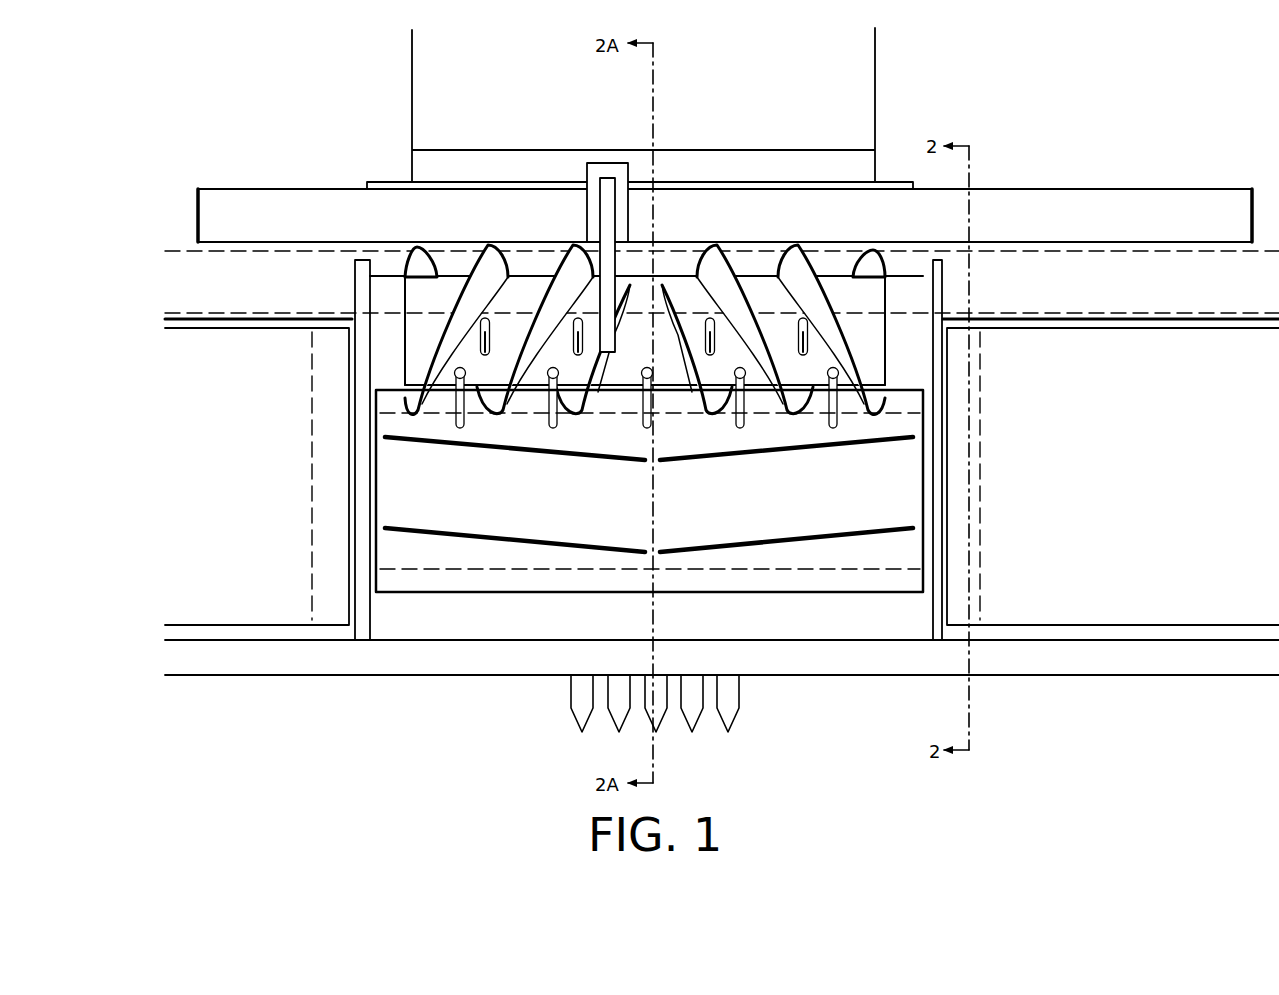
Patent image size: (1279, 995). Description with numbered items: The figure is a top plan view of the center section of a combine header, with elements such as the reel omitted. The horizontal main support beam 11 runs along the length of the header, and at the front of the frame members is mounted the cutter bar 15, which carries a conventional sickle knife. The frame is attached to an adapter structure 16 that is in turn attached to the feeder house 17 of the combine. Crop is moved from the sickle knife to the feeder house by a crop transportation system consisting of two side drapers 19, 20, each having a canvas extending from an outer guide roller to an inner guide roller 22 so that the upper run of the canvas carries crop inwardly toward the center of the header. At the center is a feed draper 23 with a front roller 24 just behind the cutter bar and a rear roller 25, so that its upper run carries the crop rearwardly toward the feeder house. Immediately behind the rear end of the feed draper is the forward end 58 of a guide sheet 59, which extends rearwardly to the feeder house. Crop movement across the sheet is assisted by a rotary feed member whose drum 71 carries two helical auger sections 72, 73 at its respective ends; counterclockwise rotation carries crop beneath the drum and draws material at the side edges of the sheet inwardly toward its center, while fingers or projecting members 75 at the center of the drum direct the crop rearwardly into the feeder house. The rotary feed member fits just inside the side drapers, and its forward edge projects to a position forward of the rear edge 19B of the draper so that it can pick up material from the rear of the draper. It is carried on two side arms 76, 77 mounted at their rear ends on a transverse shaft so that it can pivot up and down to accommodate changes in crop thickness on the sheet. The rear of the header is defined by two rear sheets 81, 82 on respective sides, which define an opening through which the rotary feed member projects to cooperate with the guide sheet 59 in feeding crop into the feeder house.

The main support beam 11 is at (305, 318).
The cutter bar 15 is at (893, 657).
The adapter structure 16 is at (407, 203).
The feeder house 17 is at (430, 70).
The side draper 19 is at (1122, 600).
The rear edge of the draper 19B is at (1048, 329).
The side draper 20 is at (222, 593).
The inner guide roller 22 is at (312, 595).
The feed draper 23 is at (578, 518).
The front roller 24 is at (815, 572).
The rear roller 25 is at (850, 415).
The forward end of the guide sheet 58 is at (672, 396).
The guide sheet 59 is at (535, 395).
The drum 71 is at (763, 394).
The helical auger section 72 is at (857, 394).
The helical auger section 73 is at (503, 414).
The fingers or projecting members 75 is at (640, 414).
The side arm 76 is at (932, 272).
The side arm 77 is at (360, 277).
The rear sheet 81 is at (1123, 327).
The rear sheet 82 is at (223, 326).